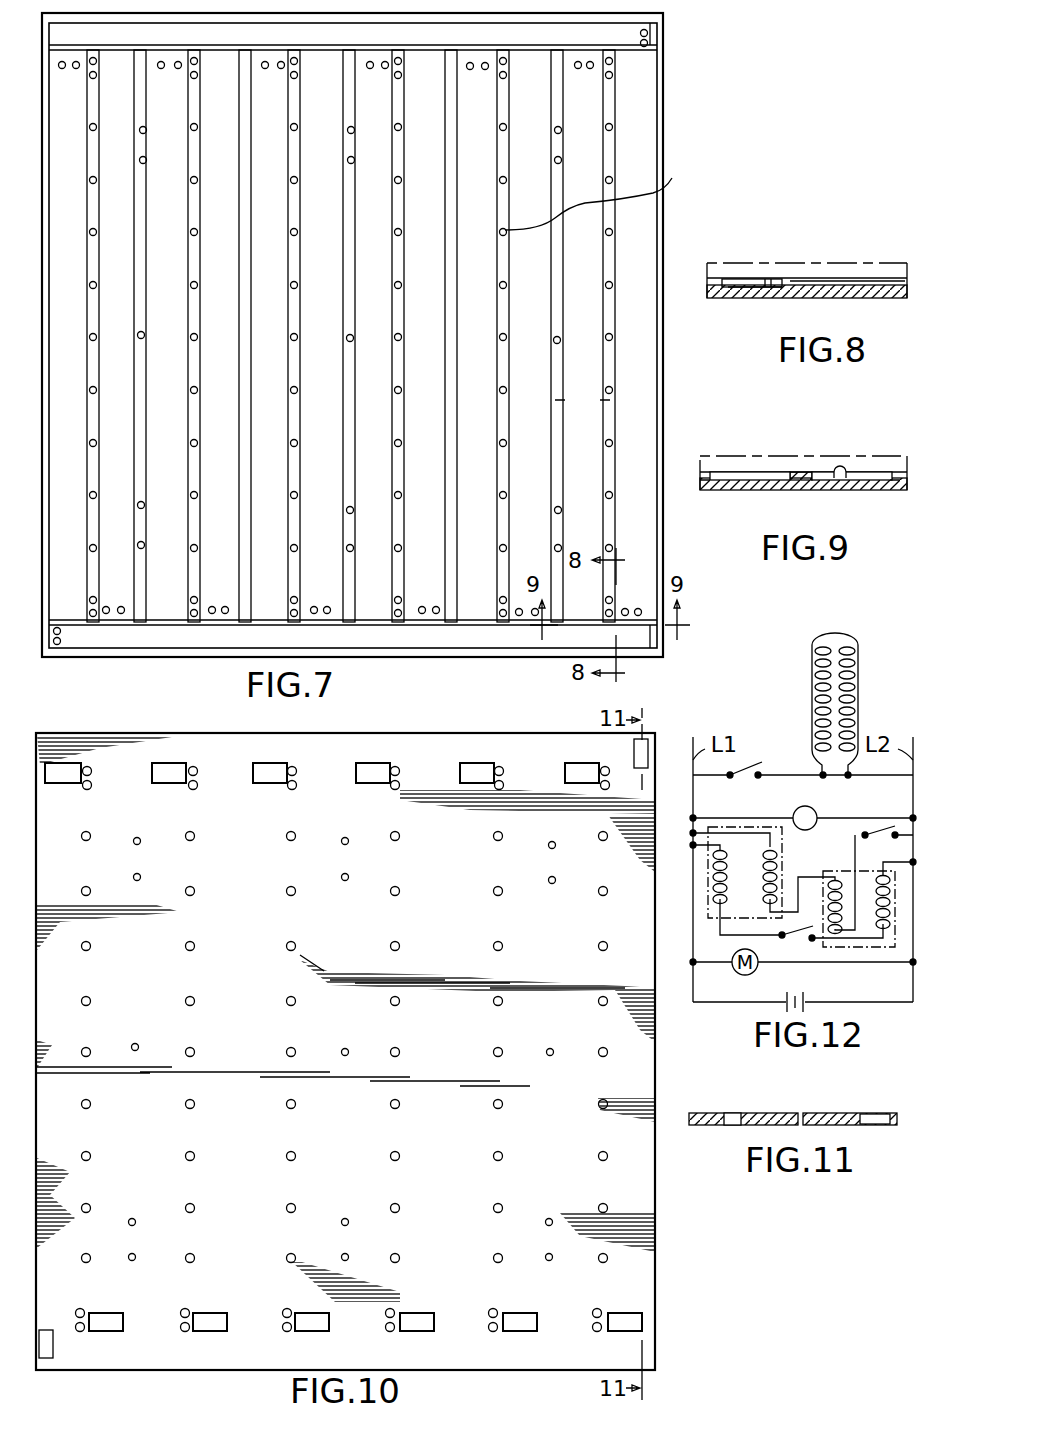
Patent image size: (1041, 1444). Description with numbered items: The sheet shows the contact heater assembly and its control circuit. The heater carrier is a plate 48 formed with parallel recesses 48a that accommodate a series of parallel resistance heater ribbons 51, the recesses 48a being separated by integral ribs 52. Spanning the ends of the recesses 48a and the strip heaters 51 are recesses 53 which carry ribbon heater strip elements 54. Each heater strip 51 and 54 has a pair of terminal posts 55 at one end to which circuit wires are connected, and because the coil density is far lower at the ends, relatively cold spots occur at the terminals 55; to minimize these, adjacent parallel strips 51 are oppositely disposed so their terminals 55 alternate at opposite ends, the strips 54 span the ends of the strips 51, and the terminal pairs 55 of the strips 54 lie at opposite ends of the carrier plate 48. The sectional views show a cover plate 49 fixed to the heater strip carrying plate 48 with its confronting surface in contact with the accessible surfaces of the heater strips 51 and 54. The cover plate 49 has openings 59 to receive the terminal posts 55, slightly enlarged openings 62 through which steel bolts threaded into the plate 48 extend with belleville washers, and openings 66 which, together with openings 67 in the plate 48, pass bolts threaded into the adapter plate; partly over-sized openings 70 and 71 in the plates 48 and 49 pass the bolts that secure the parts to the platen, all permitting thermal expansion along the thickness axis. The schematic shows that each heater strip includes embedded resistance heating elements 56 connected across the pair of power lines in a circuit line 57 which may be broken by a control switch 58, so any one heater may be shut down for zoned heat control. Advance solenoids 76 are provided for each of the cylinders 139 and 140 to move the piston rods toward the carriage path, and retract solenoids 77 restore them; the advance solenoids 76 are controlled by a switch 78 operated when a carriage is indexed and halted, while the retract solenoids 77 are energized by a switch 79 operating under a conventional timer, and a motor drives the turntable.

In FIG. 7, the plate 48 is at (665, 234).
In FIG. 8, the plate 48 is at (852, 297).
In FIG. 9, the plate 48 is at (746, 488).
In FIG. 7, the parallel recesses 48a is at (660, 182).
In FIG. 9, the parallel recesses 48a is at (840, 480).
In FIG. 8, the cover plate 49 is at (806, 270).
In FIG. 9, the cover plate 49 is at (866, 465).
In FIG. 10, the cover plate 49 is at (333, 1027).
In FIG. 11, the cover plate 49 is at (712, 1113).
In FIG. 7, the resistance heater ribbons 51 is at (517, 354).
In FIG. 8, the resistance heater ribbons 51 is at (855, 282).
In FIG. 9, the resistance heater ribbons 51 is at (760, 475).
In FIG. 7, the integral ribs 52 is at (604, 403).
In FIG. 9, the integral ribs 52 is at (713, 470).
In FIG. 7, the recesses 53 is at (645, 55).
In FIG. 8, the recesses 53 is at (745, 290).
In FIG. 7, the ribbon heater strip elements 54 is at (618, 47).
In FIG. 8, the ribbon heater strip elements 54 is at (738, 282).
In FIG. 7, the terminal posts 55 is at (652, 43).
In FIG. 12, the terminal posts 55 is at (848, 779).
In FIG. 12, the resistance heating elements 56 is at (862, 702).
In FIG. 12, the circuit line 57 is at (803, 778).
In FIG. 12, the control switch 58 is at (752, 766).
In FIG. 10, the openings 59 is at (555, 1320).
In FIG. 11, the openings 59 is at (735, 1114).
In FIG. 10, the enlarged openings 62 is at (494, 842).
In FIG. 7, the openings 66 is at (613, 79).
In FIG. 10, the openings 67 is at (600, 788).
In FIG. 7, the over-sized openings 70 is at (147, 132).
In FIG. 10, the over-sized openings 71 is at (139, 845).
In FIG. 12, the advance solenoids 76 is at (722, 893).
In FIG. 12, the retract solenoids 77 is at (758, 878).
In FIG. 12, the switch 78 is at (800, 942).
In FIG. 12, the switch 79 is at (870, 830).
In FIG. 12, the cylinder 139 is at (760, 827).
In FIG. 12, the cylinder 140 is at (889, 948).